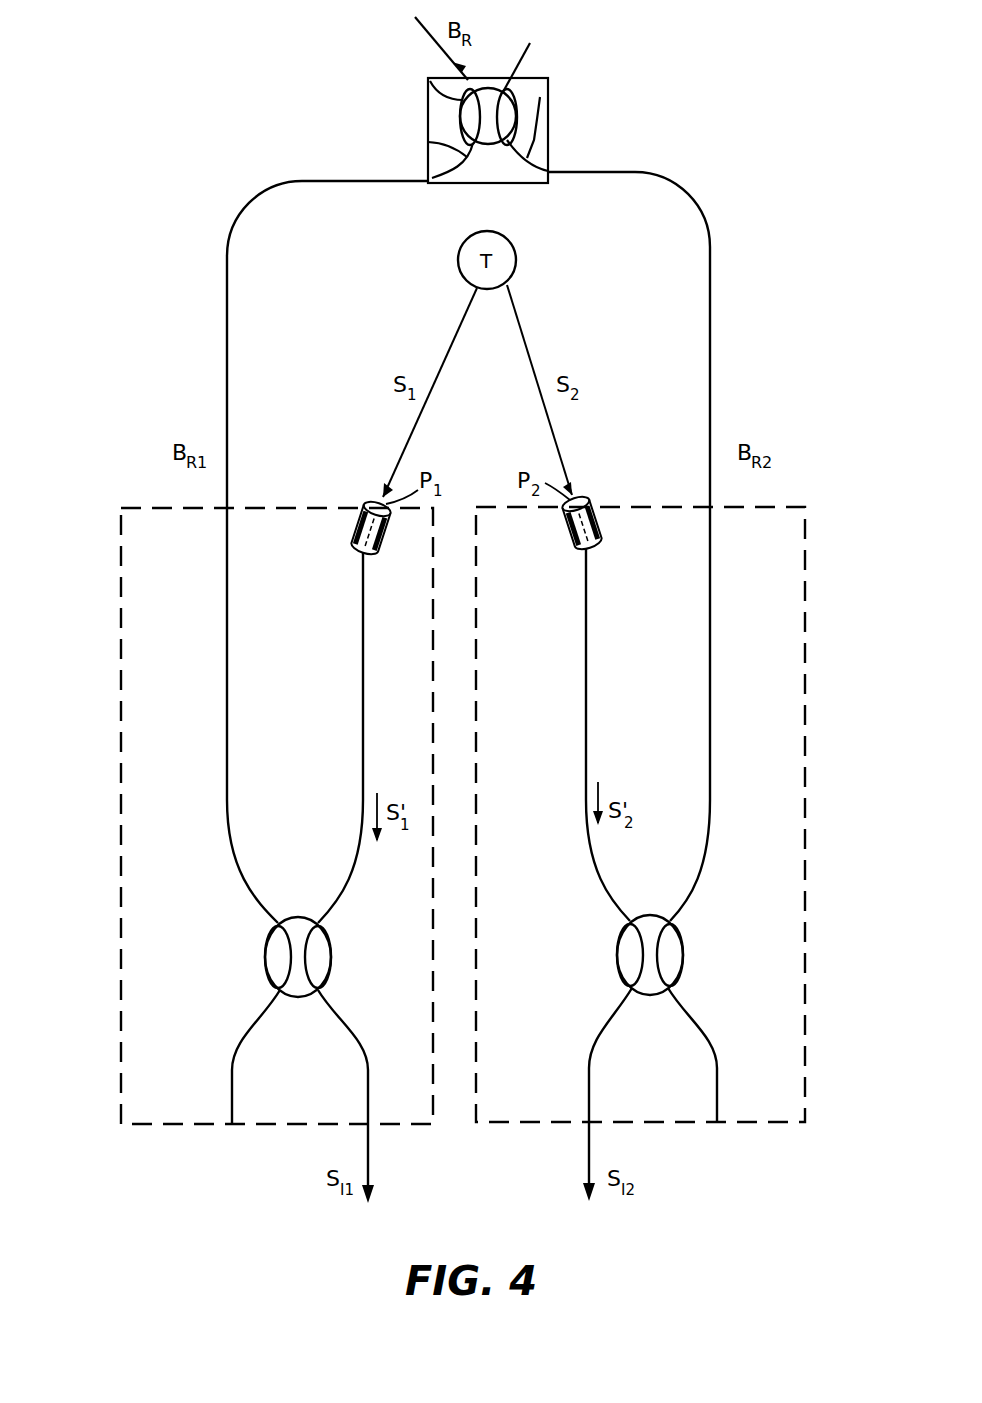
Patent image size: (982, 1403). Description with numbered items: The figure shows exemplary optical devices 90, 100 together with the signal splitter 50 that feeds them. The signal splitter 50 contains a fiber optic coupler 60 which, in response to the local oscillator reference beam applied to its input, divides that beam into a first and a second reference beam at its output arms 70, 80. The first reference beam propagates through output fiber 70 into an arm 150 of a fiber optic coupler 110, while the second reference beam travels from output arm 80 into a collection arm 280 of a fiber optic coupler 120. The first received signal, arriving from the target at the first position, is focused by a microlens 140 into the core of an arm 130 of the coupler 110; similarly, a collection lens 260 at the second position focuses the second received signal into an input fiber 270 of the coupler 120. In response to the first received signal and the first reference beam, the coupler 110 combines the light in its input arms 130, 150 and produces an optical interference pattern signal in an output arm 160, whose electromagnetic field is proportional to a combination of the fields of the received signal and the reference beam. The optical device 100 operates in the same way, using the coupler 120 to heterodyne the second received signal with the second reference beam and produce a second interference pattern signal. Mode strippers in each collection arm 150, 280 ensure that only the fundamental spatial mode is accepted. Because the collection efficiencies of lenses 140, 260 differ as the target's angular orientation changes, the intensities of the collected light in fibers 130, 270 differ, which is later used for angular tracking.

The signal splitter 50 is at (478, 184).
The fiber optic coupler 60 is at (428, 78).
The output arm 70 is at (428, 142).
The output arm 80 is at (540, 100).
The optical device 90 is at (120, 808).
The optical device 100 is at (805, 863).
The fiber optic coupler 110 is at (265, 962).
The fiber optic coupler 120 is at (617, 960).
The arm 130 is at (363, 668).
The microlens 140 is at (352, 543).
The arm 150 is at (228, 663).
The output arm 160 is at (373, 1046).
The collection lens 260 is at (600, 540).
The input fiber 270 is at (586, 668).
The collection arm 280 is at (712, 668).